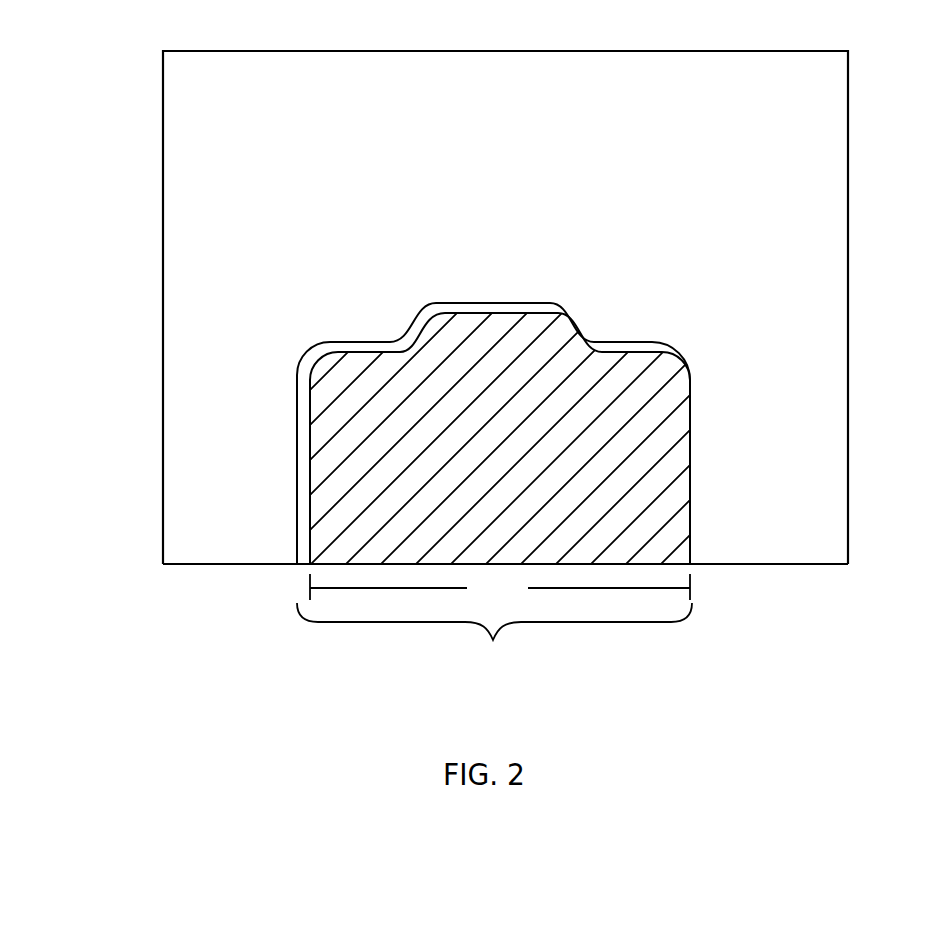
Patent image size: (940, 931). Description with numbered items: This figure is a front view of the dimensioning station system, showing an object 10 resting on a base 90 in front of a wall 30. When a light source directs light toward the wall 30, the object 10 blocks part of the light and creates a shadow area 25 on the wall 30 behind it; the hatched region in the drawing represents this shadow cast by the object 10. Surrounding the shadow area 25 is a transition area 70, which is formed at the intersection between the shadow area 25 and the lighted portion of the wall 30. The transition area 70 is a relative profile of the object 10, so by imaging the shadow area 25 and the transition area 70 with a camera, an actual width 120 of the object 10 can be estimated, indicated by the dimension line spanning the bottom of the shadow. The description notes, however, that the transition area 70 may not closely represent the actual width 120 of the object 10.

The object 10 is at (690, 478).
The transition area 70 is at (643, 337).
The wall 30 is at (848, 338).
The base 90 is at (788, 566).
The actual width 120 is at (500, 587).
The shadow area 25 is at (494, 637).